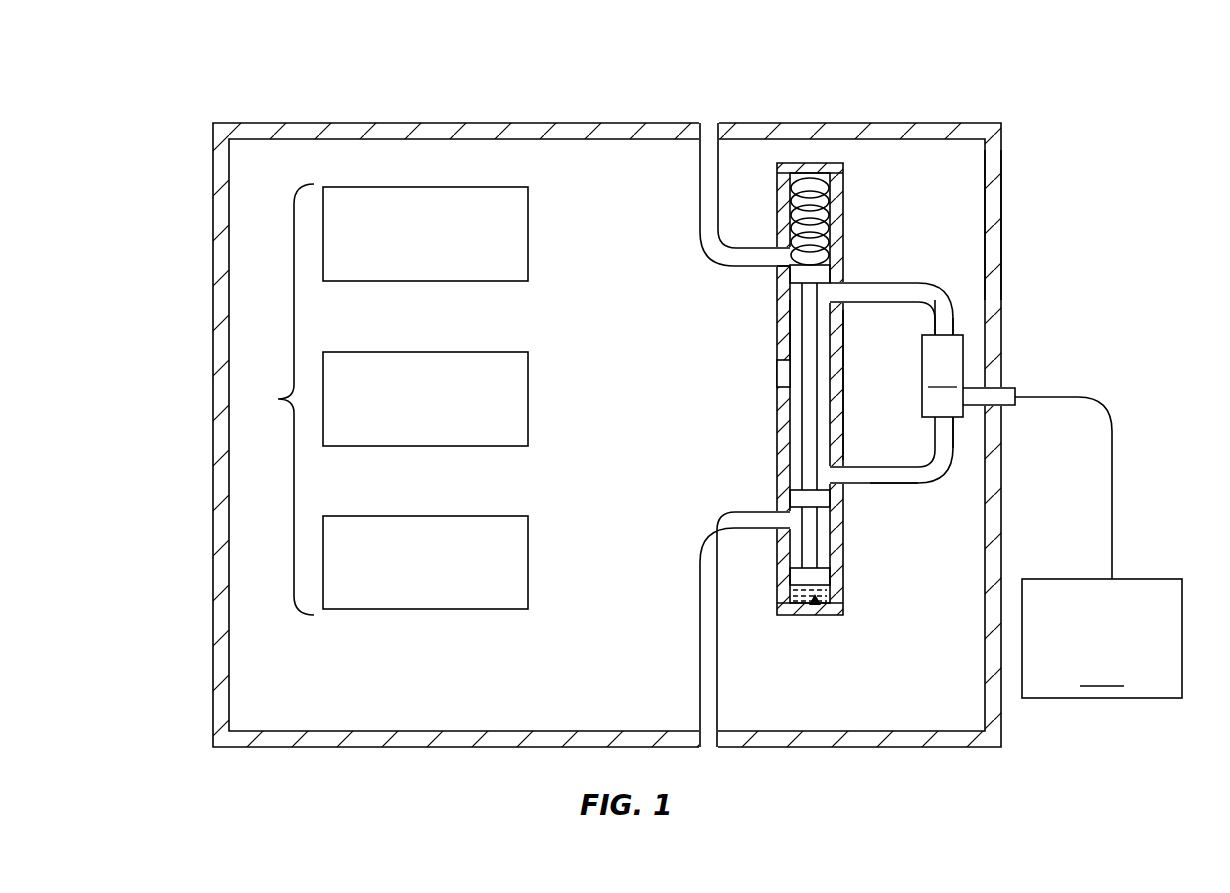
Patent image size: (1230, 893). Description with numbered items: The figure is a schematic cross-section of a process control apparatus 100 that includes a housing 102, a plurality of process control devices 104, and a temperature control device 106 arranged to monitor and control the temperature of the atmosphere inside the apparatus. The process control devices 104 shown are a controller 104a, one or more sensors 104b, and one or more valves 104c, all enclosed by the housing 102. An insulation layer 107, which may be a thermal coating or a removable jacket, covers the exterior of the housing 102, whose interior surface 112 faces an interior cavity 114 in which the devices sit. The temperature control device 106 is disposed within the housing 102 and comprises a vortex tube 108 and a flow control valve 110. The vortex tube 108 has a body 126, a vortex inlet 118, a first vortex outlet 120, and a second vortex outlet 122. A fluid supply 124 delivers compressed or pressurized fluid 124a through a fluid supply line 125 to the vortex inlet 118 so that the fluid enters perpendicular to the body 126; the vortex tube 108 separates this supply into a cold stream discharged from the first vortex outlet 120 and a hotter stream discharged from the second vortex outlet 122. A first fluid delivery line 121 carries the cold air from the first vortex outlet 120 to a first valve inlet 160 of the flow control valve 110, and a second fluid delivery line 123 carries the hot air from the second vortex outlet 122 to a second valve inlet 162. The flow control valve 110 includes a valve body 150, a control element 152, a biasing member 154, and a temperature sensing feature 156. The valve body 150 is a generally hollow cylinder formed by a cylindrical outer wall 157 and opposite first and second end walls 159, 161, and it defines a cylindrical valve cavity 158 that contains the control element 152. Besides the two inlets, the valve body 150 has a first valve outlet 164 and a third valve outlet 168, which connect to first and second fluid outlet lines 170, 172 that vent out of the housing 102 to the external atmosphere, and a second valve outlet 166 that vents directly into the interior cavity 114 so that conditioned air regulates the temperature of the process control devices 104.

The process control apparatus 100 is at (921, 64).
The housing 102 is at (622, 133).
The process control devices 104 is at (421, 399).
The controller 104a is at (528, 218).
The sensors 104b is at (528, 388).
The valves 104c is at (528, 548).
The temperature control device 106 is at (722, 398).
The insulation layer 107 is at (1003, 222).
The vortex tube 108 is at (919, 369).
The flow control valve 110 is at (818, 412).
The interior surface 112 is at (985, 222).
The interior cavity 114 is at (660, 299).
The vortex inlet 118 is at (1016, 395).
The first vortex outlet 120 is at (953, 333).
The first fluid delivery line 121 is at (907, 287).
The second vortex outlet 122 is at (955, 420).
The second fluid delivery line 123 is at (905, 483).
The fluid supply 124 is at (1110, 624).
The compressed or pressurized fluid 124a is at (1101, 675).
The fluid supply line 125 is at (1100, 408).
The body 126 is at (917, 365).
The valve body 150 is at (845, 200).
The control element 152 is at (808, 428).
The biasing member 154 is at (830, 225).
The temperature sensing feature 156 is at (818, 608).
The cylindrical outer wall 157 is at (840, 405).
The cylindrical valve cavity 158 is at (797, 327).
The first end wall 159 is at (832, 170).
The first valve inlet 160 is at (845, 283).
The second end wall 161 is at (795, 612).
The second valve inlet 162 is at (845, 468).
The first valve outlet 164 is at (775, 268).
The second valve outlet 166 is at (777, 376).
The third valve outlet 168 is at (773, 530).
The first fluid outlet line 170 is at (700, 192).
The second fluid outlet line 172 is at (700, 640).